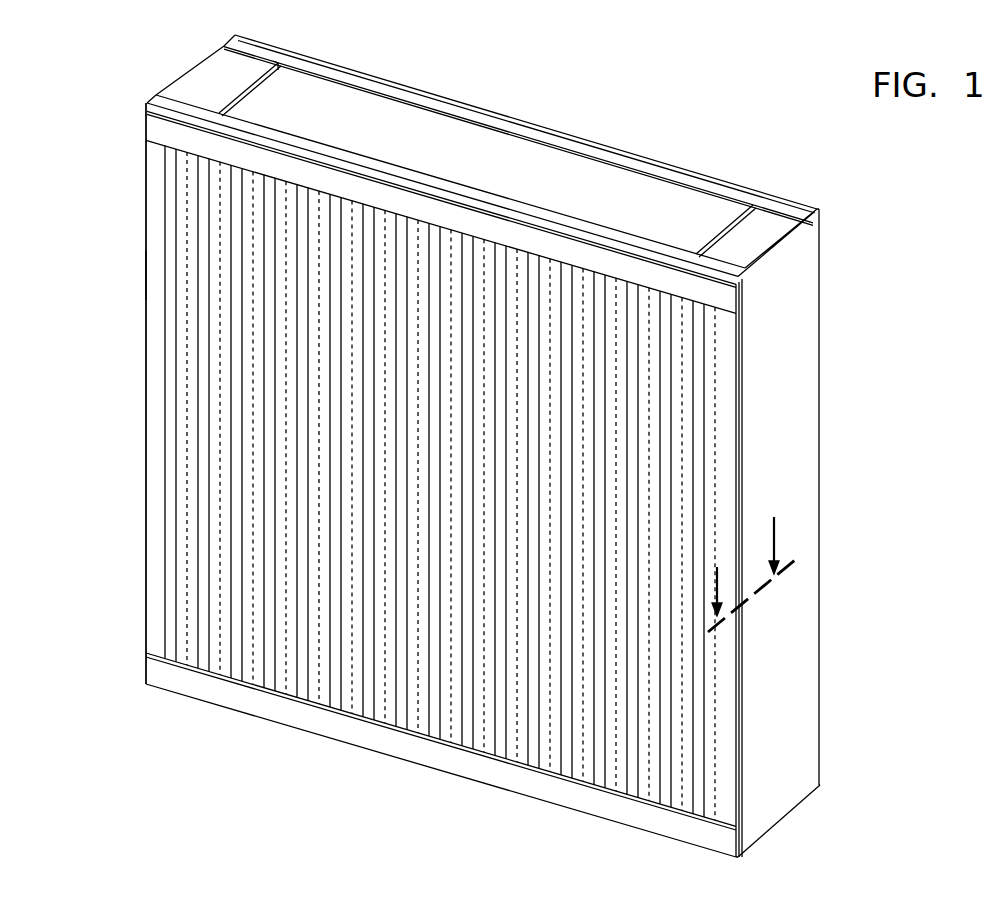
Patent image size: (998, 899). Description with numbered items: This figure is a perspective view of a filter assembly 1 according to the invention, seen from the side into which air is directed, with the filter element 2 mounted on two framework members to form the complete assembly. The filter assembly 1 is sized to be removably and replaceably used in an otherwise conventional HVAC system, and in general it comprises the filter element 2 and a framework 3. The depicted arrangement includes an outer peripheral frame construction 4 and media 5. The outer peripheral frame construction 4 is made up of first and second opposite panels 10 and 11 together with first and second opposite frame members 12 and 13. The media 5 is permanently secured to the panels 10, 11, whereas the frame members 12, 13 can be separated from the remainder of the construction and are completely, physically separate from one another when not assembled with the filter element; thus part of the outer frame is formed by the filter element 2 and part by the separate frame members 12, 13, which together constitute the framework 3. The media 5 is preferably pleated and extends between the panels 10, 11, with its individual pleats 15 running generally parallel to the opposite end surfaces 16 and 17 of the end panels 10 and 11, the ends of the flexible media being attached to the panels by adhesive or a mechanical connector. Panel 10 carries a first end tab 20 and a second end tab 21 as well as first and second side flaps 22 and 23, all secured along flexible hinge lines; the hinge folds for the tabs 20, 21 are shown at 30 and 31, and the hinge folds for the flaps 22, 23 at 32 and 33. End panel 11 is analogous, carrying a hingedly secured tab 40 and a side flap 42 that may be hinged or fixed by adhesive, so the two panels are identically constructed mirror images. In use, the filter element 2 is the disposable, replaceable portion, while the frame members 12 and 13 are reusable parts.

The filter assembly 1 is at (855, 198).
The filter element 2 is at (693, 450).
The framework 3 is at (585, 178).
The outer peripheral frame construction 4 is at (452, 140).
The media 5 is at (680, 485).
The first panel 10 is at (804, 296).
The second panel 11 is at (147, 270).
The first frame member 12 is at (523, 160).
The second frame member 13 is at (258, 702).
The pleats 15 is at (188, 645).
The end surface 16 is at (793, 422).
The end surface 17 is at (178, 83).
The first end tab 20 is at (763, 227).
The second end tab 21 is at (772, 828).
The first side flap 22 is at (724, 340).
The second side flap 23 is at (822, 254).
The hinge fold 30 is at (772, 250).
The hinge fold 31 is at (802, 802).
The hinge fold 32 is at (743, 385).
The hinge fold 33 is at (822, 470).
The first tab 40 is at (227, 77).
The first side flap 42 is at (157, 187).